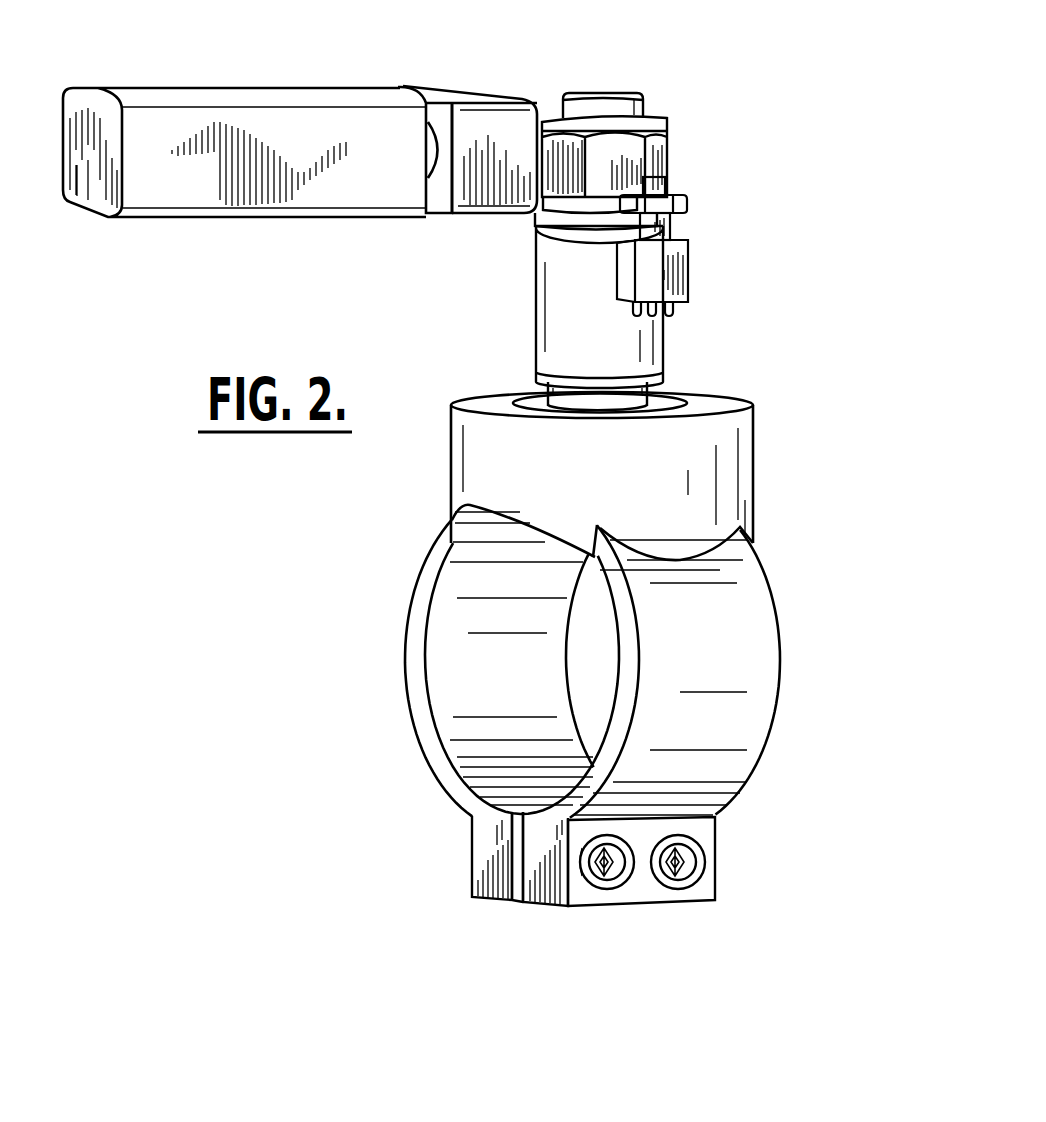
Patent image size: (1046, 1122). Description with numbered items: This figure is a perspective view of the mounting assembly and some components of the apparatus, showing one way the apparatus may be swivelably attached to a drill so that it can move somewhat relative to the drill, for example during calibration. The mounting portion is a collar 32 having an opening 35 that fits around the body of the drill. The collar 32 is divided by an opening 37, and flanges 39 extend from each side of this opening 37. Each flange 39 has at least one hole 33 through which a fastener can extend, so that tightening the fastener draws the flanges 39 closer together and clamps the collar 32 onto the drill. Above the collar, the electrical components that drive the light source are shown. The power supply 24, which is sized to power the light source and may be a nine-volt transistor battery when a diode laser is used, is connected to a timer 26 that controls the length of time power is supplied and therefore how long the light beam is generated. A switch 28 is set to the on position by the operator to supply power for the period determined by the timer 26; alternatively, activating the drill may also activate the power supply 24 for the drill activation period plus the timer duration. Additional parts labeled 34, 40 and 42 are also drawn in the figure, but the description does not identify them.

The power supply 24 is at (296, 88).
The timer 26 is at (449, 85).
The switch 28 is at (661, 178).
The collar 32 is at (428, 766).
The hole 33 is at (684, 864).
The cap 34 is at (625, 90).
The opening 35 is at (587, 637).
The opening 37 is at (518, 900).
The flanges 39 is at (545, 852).
The solenoid 40 is at (650, 346).
The hex nut 42 is at (557, 176).